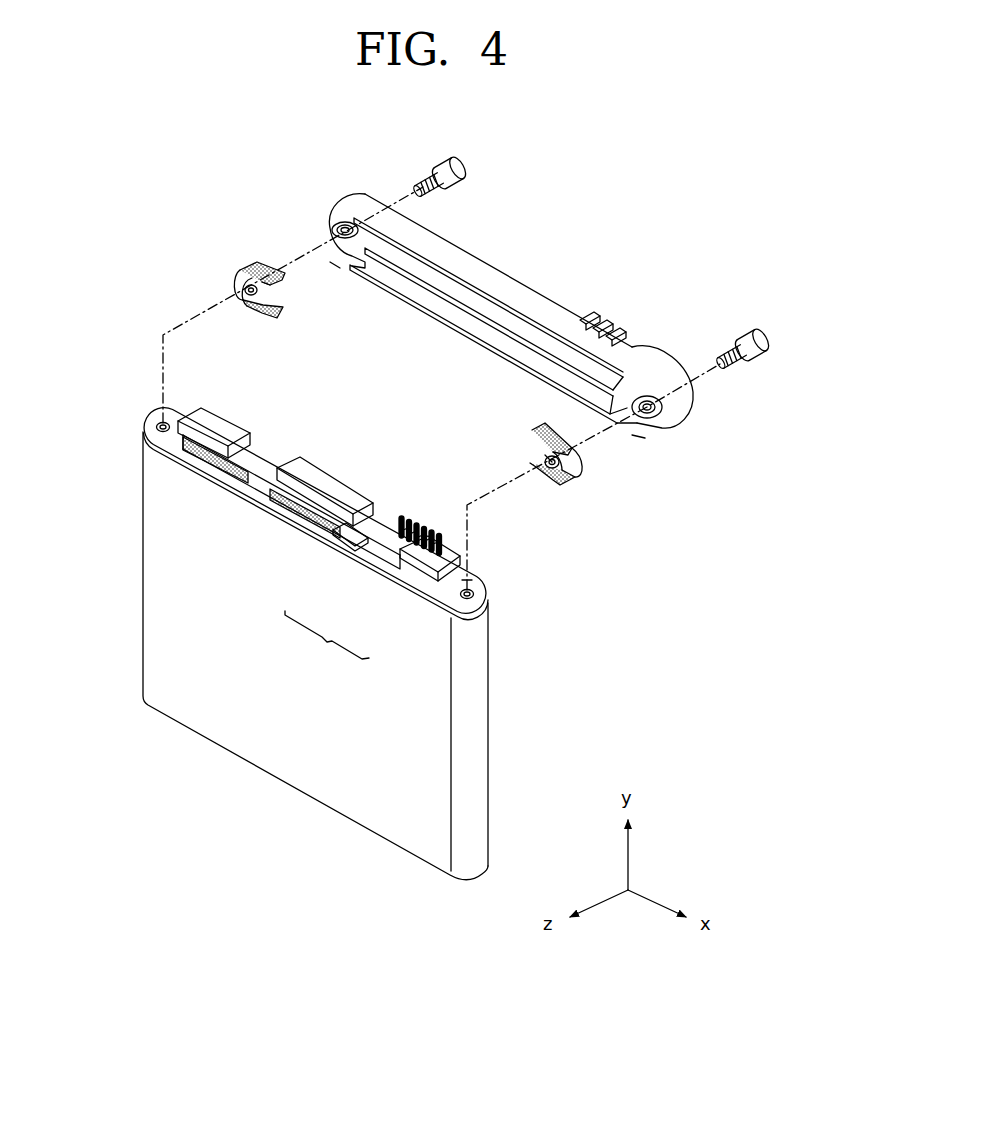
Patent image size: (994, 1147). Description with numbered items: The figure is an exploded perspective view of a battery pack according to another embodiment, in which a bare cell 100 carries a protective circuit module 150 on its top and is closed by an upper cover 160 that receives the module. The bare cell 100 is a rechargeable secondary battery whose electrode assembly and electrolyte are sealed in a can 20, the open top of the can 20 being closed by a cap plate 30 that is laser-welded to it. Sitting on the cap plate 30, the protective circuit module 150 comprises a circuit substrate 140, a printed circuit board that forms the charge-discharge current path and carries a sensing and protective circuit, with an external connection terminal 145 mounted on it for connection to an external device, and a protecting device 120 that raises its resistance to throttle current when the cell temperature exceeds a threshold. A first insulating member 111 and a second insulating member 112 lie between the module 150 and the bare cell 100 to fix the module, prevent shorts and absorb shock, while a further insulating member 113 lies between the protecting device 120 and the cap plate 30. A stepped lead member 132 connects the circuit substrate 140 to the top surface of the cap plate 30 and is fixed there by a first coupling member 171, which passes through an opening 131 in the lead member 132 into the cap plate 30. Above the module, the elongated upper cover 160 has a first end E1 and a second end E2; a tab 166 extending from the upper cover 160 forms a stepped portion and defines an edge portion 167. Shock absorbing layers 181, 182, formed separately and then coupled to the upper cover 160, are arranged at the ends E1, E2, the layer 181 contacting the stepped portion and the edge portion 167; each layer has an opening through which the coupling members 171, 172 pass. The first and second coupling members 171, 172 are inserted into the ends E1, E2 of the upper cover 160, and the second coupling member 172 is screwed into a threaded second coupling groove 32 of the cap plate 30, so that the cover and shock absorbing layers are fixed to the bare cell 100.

The bare cell 100 is at (380, 656).
The can 20 is at (473, 675).
The cap plate 30 is at (316, 522).
The second coupling groove 32 is at (155, 425).
The opening 131 is at (480, 588).
The lead member 132 is at (465, 582).
The first insulating member 111 is at (292, 505).
The second insulating member 112 is at (210, 455).
The insulating member 113 is at (336, 537).
The protecting device 120 is at (346, 547).
The circuit substrate 140 is at (438, 566).
The external connection terminal 145 is at (403, 556).
The protective circuit module 150 is at (327, 641).
The upper cover 160 is at (526, 356).
The tab 166 is at (643, 372).
The edge portion 167 is at (650, 430).
The first coupling member 171 is at (755, 330).
The second coupling member 172 is at (460, 165).
The shock absorbing layer 181 is at (567, 476).
The shock absorbing layer 182 is at (241, 282).
The first end E1 is at (636, 440).
The second end E2 is at (328, 264).